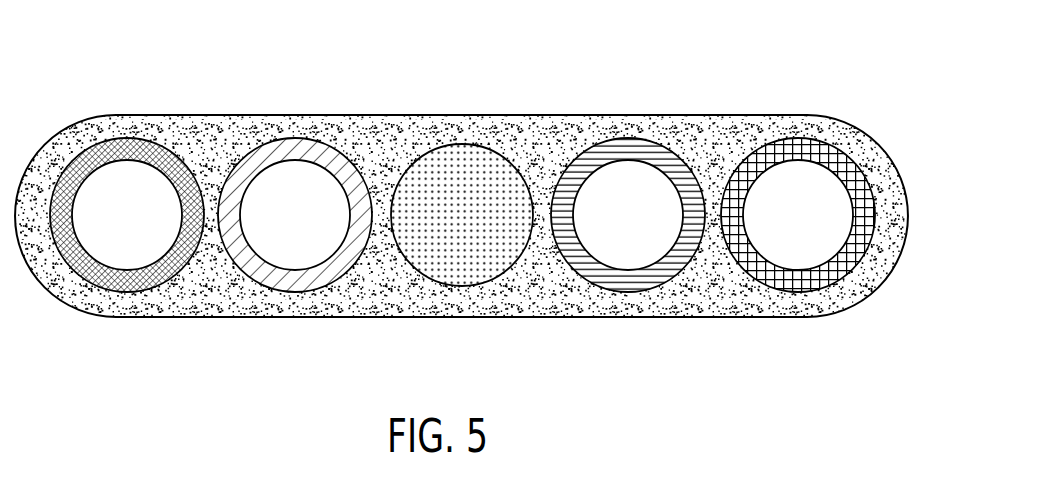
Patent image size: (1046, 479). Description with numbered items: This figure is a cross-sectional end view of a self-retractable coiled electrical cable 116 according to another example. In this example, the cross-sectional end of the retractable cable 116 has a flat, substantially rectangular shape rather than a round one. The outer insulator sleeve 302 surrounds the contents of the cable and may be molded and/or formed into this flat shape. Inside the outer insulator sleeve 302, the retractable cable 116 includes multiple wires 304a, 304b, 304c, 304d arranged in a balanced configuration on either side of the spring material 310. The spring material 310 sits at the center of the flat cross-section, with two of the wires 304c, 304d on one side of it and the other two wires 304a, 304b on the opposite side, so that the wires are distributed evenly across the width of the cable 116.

The self-retractable coiled electrical cable 116 is at (183, 78).
The outer insulator sleeve 302 is at (724, 128).
The wire 304a is at (595, 277).
The wire 304b is at (787, 287).
The wire 304c is at (110, 290).
The wire 304d is at (267, 287).
The spring material 310 is at (445, 263).